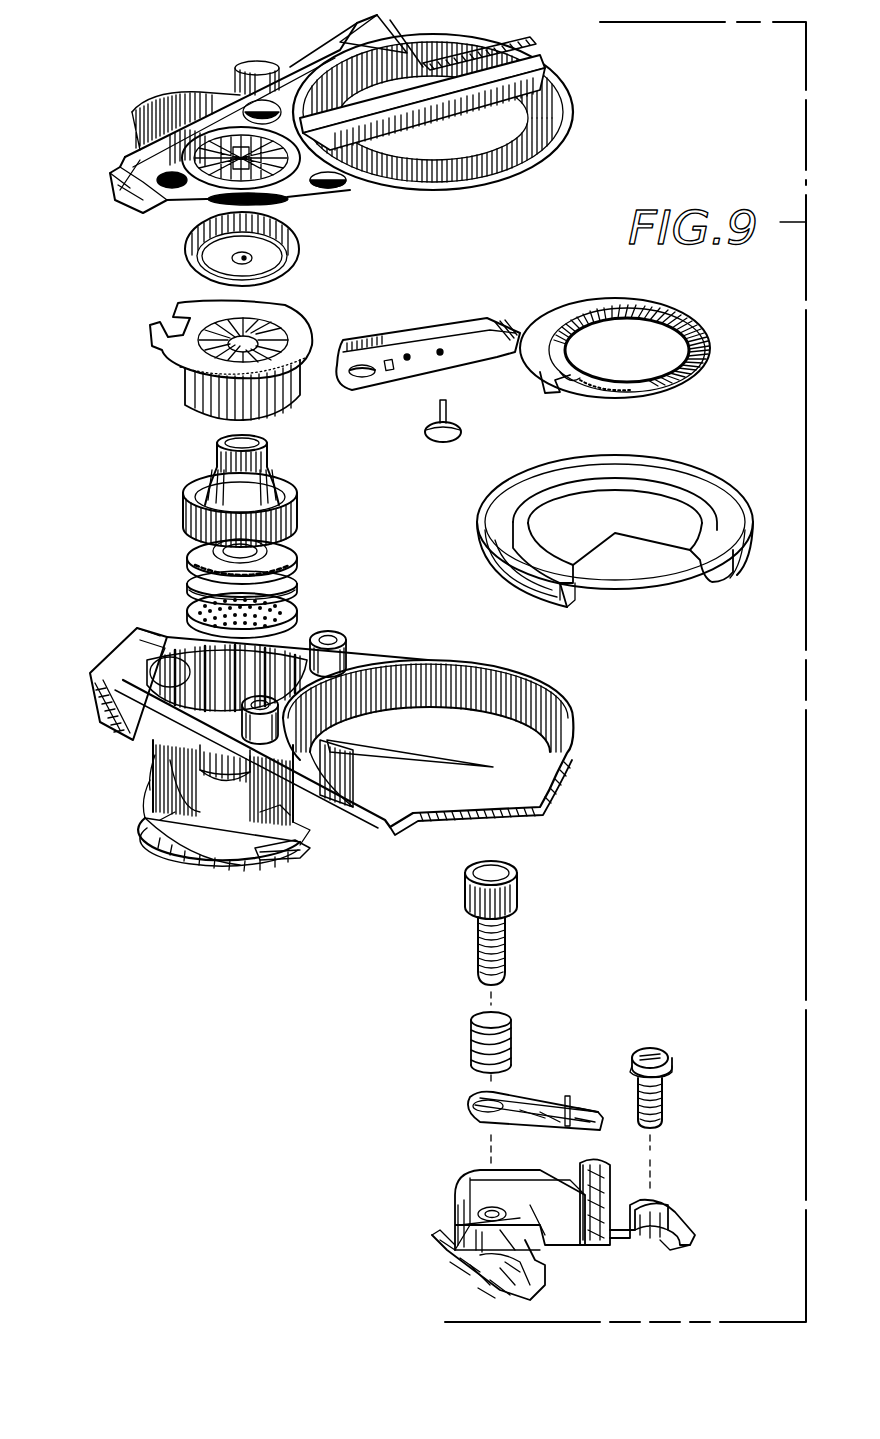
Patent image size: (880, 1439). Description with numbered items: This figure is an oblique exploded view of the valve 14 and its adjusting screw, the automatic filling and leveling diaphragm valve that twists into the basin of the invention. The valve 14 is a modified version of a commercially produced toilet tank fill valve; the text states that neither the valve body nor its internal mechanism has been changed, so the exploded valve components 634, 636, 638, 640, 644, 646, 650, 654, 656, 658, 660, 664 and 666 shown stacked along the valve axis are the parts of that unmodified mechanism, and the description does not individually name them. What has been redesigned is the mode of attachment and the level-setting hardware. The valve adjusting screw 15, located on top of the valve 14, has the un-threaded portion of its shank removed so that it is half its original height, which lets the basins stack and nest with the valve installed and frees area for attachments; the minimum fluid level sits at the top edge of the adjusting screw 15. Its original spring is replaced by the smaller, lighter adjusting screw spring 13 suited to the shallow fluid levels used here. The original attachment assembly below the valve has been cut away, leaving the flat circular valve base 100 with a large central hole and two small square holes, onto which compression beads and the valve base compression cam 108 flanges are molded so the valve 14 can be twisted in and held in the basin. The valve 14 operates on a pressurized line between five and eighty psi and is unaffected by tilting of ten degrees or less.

The valve 14 is at (95, 338).
The housing 634 is at (568, 95).
The cap 636 is at (298, 260).
The gear plate 638 is at (300, 323).
The lever arm with ring 640 is at (690, 315).
The pin 644 is at (422, 434).
The ring 646 is at (688, 460).
The shaft 650 is at (182, 487).
The washer 654 is at (188, 547).
The washer 656 is at (188, 578).
The friction disc 658 is at (188, 617).
The lower housing 660 is at (568, 704).
The valve base 100 is at (150, 852).
The valve base compression cam 108 is at (305, 842).
The valve adjusting screw 15 is at (520, 897).
The adjusting screw spring 13 is at (472, 1042).
The screw 664 is at (635, 1050).
The post 666 is at (582, 1187).